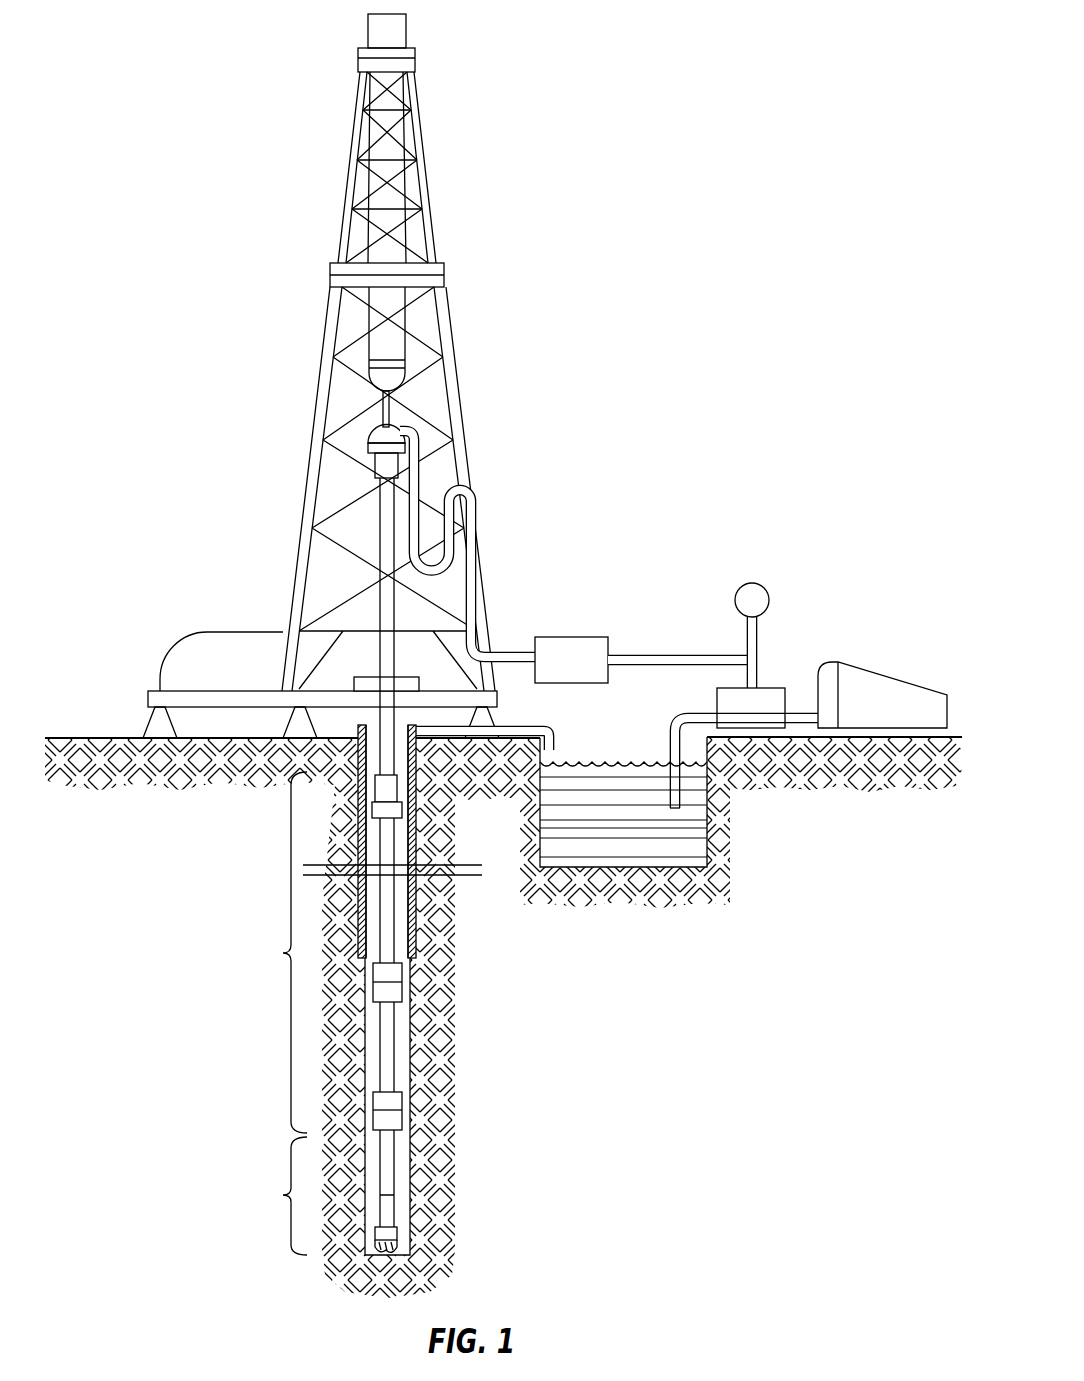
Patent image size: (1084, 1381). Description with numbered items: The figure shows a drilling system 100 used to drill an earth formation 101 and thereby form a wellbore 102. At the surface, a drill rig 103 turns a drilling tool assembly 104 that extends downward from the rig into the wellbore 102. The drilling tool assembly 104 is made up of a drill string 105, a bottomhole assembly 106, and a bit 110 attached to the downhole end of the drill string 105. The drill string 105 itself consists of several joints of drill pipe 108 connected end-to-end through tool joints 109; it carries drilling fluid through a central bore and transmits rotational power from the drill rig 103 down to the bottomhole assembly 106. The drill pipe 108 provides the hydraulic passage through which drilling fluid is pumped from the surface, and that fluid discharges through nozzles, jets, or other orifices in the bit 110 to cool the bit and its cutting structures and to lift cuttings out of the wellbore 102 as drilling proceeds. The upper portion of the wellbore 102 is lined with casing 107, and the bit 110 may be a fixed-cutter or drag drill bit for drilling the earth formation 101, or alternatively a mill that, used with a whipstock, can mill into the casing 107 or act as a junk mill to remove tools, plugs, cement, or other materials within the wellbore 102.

The drilling system 100 is at (503, 650).
The earth formation 101 is at (512, 780).
The wellbore 102 is at (412, 1088).
The drill rig 103 is at (318, 390).
The drilling tool assembly 104 is at (428, 939).
The drill string 105 is at (273, 952).
The bottomhole assembly 106 is at (273, 1196).
The casing 107 is at (428, 912).
The drill pipe 108 is at (396, 1050).
The tool joints 109 is at (398, 997).
The bit 110 is at (403, 1245).